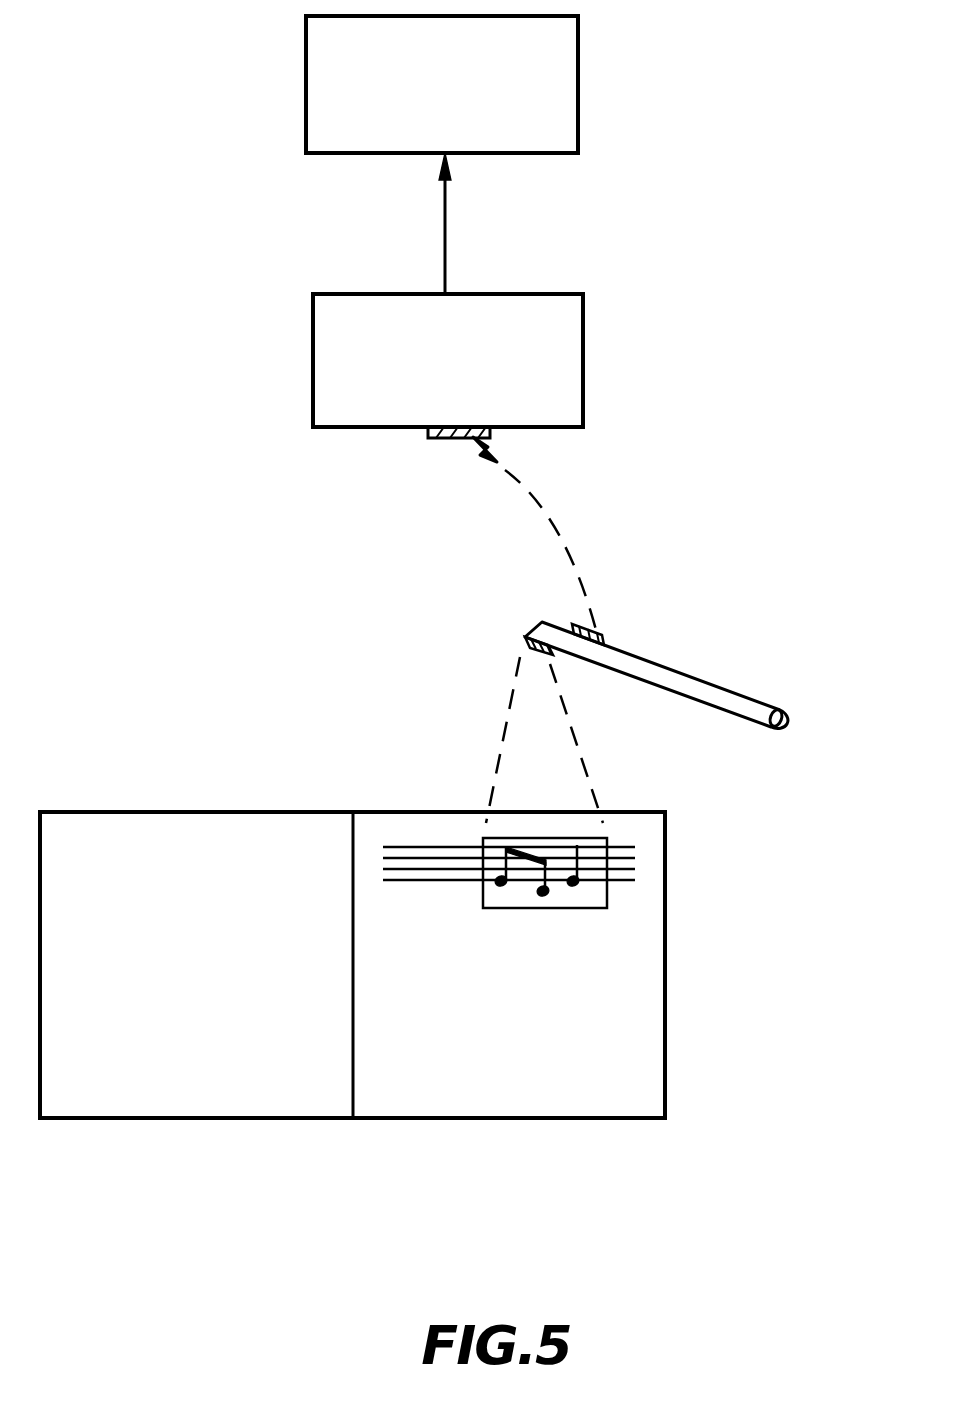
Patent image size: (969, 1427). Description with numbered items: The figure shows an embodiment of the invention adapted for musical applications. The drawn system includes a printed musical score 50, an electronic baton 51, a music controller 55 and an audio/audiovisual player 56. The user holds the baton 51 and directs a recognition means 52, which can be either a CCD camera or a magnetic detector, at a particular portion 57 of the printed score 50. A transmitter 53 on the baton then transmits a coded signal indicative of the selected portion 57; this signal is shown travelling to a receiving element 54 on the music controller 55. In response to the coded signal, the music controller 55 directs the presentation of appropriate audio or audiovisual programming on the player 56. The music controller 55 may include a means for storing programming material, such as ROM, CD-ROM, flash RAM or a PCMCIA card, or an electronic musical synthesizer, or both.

The printed musical score 50 is at (201, 812).
The electronic baton 51 is at (755, 699).
The recognition means 52 is at (555, 657).
The transmitter 53 is at (578, 626).
The signal receiver of music controller 54 is at (442, 440).
The music controller 55 is at (583, 358).
The audio/audiovisual player 56 is at (578, 75).
The portion of printed score 57 is at (607, 908).